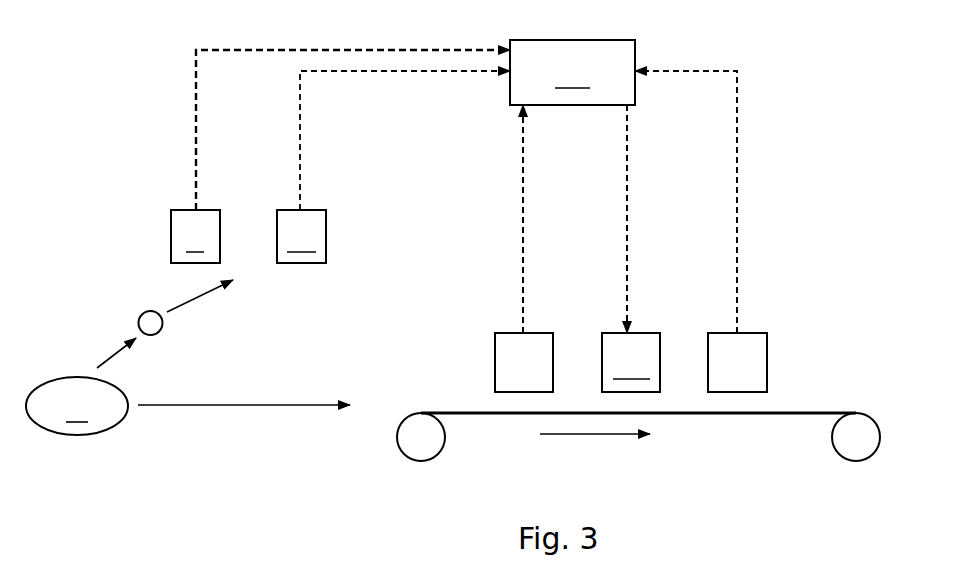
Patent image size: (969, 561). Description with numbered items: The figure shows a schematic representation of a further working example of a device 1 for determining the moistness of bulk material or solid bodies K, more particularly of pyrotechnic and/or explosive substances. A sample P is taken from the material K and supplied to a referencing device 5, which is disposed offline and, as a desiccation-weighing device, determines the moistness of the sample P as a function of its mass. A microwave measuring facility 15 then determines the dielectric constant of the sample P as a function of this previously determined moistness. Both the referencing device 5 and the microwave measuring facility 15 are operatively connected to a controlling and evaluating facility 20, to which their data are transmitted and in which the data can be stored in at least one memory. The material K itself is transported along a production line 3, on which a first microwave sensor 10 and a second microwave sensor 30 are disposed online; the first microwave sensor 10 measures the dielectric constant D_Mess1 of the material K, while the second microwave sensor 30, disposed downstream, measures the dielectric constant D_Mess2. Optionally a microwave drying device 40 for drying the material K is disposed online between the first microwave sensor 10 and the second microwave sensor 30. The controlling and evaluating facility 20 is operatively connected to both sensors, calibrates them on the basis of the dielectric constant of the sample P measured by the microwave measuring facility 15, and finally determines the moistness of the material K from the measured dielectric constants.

The device 1 is at (97, 127).
The production line 3 is at (843, 386).
The referencing device 5 is at (340, 156).
The microwave measuring facility 15 is at (393, 167).
The controlling and evaluating facility 20 is at (627, 186).
The first microwave sensor 10 is at (520, 345).
The second microwave sensor 30 is at (742, 350).
The microwave drying device 40 is at (631, 362).
The sample P is at (142, 319).
The material K is at (188, 357).